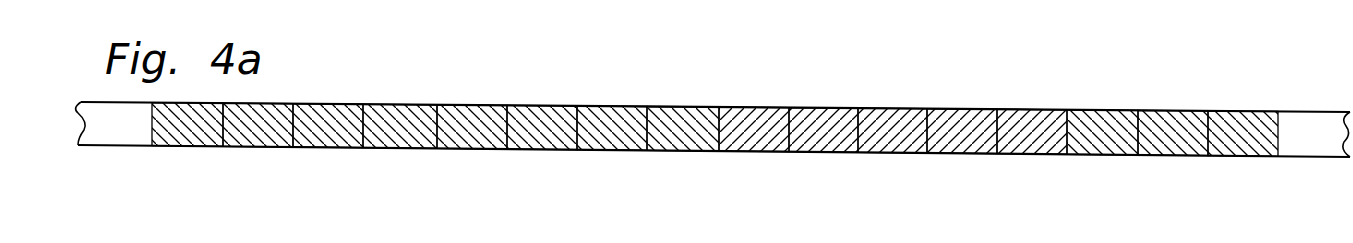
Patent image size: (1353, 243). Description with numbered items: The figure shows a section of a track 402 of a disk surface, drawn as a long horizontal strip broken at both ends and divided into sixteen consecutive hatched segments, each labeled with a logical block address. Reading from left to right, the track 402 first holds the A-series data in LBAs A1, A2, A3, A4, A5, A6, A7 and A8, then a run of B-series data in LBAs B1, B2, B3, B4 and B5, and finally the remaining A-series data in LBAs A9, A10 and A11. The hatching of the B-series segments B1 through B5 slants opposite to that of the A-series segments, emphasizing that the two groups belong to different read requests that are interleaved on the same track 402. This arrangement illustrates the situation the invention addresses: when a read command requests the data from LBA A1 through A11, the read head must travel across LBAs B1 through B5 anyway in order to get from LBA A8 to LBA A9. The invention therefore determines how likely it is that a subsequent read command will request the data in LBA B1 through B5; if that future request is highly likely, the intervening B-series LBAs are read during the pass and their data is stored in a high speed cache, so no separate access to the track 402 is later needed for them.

The track 402 is at (713, 122).
The LBA A1 is at (187, 141).
The LBA A2 is at (258, 141).
The LBA A3 is at (328, 143).
The LBA A4 is at (400, 143).
The LBA A5 is at (472, 144).
The LBA A6 is at (542, 144).
The LBA A7 is at (612, 145).
The LBA A8 is at (683, 146).
The LBA A9 is at (1102, 149).
The LBA A10 is at (1173, 149).
The LBA A11 is at (1243, 150).
The LBA B1 is at (754, 146).
The LBA B2 is at (823, 147).
The LBA B3 is at (892, 147).
The LBA B4 is at (962, 148).
The LBA B5 is at (1032, 148).